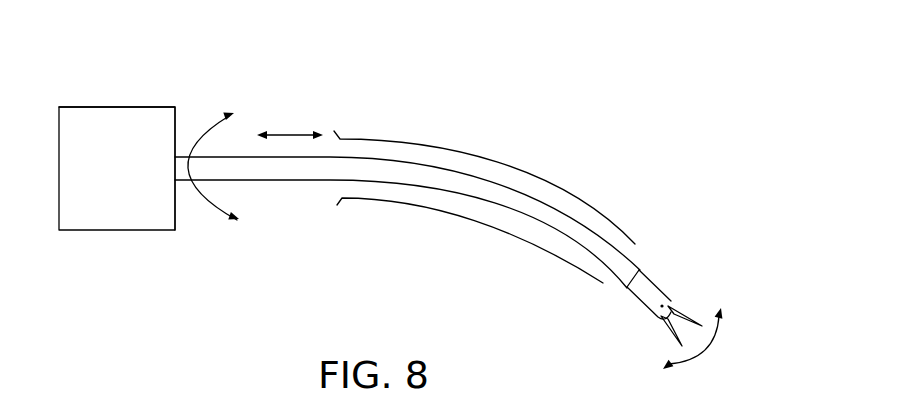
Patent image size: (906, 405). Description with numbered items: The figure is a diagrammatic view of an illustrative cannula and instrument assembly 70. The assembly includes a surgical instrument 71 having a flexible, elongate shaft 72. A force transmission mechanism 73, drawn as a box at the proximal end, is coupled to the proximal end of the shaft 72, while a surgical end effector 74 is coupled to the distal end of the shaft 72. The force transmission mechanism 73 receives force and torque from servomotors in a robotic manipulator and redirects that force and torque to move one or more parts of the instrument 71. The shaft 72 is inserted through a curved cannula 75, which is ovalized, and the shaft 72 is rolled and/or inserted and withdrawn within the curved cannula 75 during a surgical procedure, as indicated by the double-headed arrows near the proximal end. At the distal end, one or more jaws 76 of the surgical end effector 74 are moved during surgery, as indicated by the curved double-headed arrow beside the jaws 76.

The cannula and instrument assembly 70 is at (152, 62).
The surgical instrument 71 is at (168, 106).
The flexible, elongate shaft 72 is at (297, 174).
The force transmission mechanism 73 is at (114, 213).
The surgical end effector 74 is at (650, 293).
The curved cannula 75 is at (512, 170).
The jaws 76 is at (688, 313).